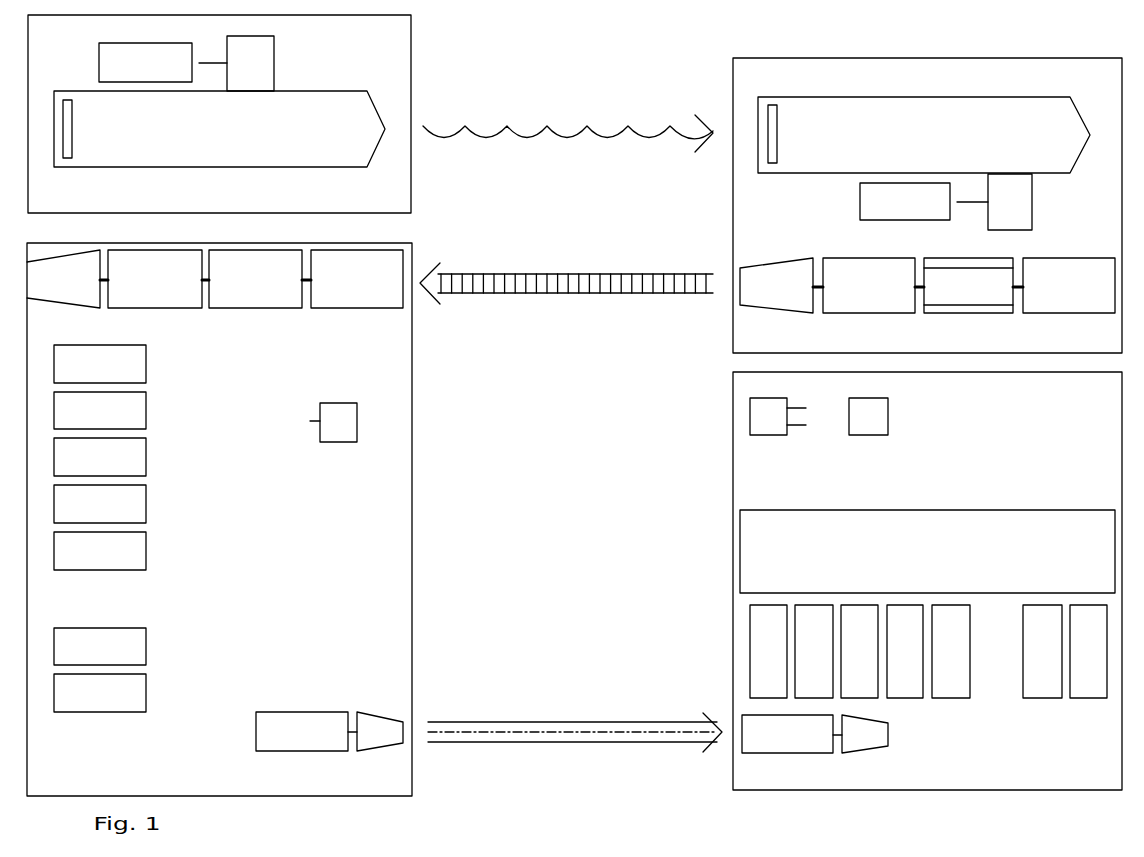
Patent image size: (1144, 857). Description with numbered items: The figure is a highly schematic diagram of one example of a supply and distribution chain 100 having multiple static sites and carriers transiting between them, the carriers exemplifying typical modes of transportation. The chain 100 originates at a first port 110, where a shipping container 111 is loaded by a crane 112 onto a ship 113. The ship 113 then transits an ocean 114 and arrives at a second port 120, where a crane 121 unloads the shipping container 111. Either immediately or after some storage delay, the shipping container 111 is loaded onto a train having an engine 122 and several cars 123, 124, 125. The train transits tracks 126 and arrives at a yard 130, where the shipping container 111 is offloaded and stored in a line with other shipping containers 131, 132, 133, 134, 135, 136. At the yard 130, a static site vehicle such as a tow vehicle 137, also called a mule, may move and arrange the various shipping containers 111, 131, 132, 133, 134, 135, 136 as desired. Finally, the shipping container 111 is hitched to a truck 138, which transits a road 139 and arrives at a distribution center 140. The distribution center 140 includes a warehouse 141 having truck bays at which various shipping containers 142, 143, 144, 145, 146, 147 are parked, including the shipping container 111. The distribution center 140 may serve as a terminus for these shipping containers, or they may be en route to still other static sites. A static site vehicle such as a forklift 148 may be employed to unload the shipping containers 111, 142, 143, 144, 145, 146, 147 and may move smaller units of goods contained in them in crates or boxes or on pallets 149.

The supply and distribution chain 100 is at (613, 48).
The first port 110 is at (263, 203).
The shipping container 111 is at (130, 73).
The crane 112 is at (236, 73).
The ship 113 is at (195, 140).
The ocean 114 is at (430, 130).
The second port 120 is at (971, 340).
The crane 121 is at (995, 213).
The engine 122 is at (45, 290).
The car 123 is at (140, 290).
The car 124 is at (241, 290).
The car 125 is at (342, 290).
The tracks 126 is at (650, 275).
The yard 130 is at (264, 790).
The shipping container 131 is at (85, 374).
The shipping container 132 is at (85, 421).
The shipping container 133 is at (85, 467).
The shipping container 134 is at (85, 514).
The shipping container 135 is at (85, 561).
The shipping container 136 is at (85, 657).
The tow vehicle 137 is at (323, 432).
The truck 138 is at (365, 741).
The road 139 is at (440, 722).
The distribution center 140 is at (1049, 783).
The warehouse 141 is at (1006, 563).
The shipping container 142 is at (753, 662).
The shipping container 143 is at (799, 662).
The shipping container 144 is at (844, 662).
The shipping container 145 is at (890, 662).
The shipping container 146 is at (936, 662).
The shipping container 147 is at (1073, 662).
The forklift 148 is at (753, 427).
The pallets 149 is at (853, 427).